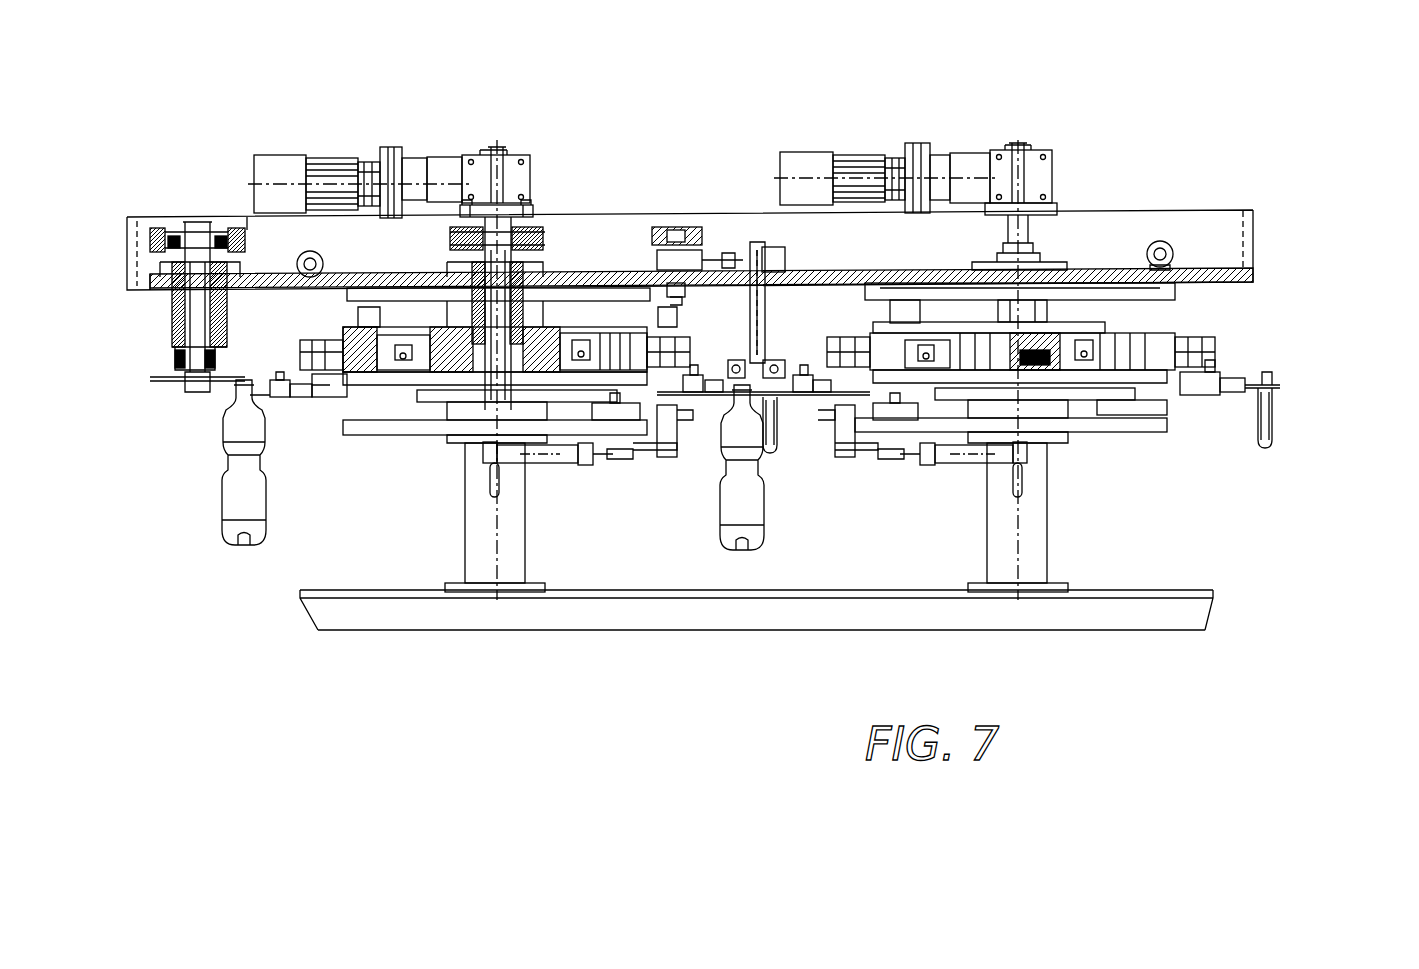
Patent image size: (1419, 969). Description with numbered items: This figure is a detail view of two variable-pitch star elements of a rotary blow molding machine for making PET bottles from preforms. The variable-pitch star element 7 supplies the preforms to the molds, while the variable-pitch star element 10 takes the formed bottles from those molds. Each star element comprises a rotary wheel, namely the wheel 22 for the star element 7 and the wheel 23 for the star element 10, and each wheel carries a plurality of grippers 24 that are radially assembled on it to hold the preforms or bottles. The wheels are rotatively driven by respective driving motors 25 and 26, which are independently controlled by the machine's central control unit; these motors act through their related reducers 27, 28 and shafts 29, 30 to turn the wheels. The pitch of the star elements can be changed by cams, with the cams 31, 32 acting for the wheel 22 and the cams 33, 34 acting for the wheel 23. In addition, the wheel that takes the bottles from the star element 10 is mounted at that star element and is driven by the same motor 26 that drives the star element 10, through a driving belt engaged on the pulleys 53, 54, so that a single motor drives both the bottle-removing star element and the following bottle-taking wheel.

The variable-pitch star element 7 is at (1112, 343).
The variable-pitch star element 10 is at (226, 206).
The rotary wheel 22 is at (1102, 358).
The rotary wheel 23 is at (420, 392).
The gripper 24 is at (1224, 392).
The driving motor 25 is at (850, 170).
The driving motor 26 is at (285, 163).
The reducer 27 is at (515, 175).
The reducer 28 is at (1012, 170).
The shaft 29 is at (1060, 212).
The shaft 30 is at (529, 230).
The cam 31 is at (1175, 292).
The cam 32 is at (1103, 424).
The cam 33 is at (194, 378).
The cam 34 is at (447, 413).
The pulley 53 is at (160, 252).
The pulley 54 is at (542, 240).